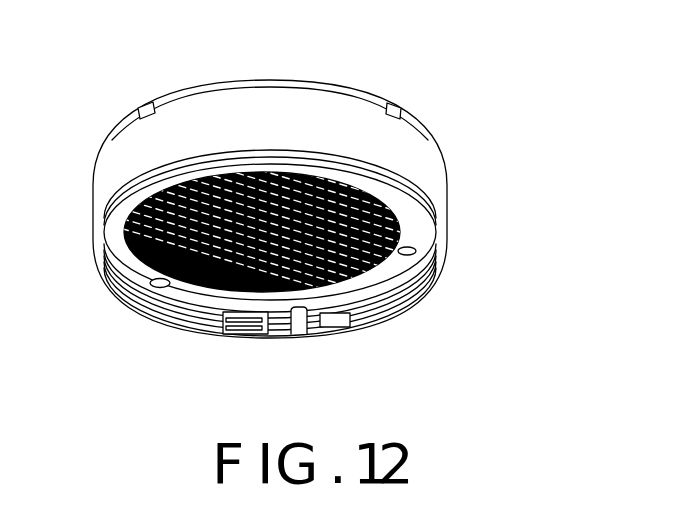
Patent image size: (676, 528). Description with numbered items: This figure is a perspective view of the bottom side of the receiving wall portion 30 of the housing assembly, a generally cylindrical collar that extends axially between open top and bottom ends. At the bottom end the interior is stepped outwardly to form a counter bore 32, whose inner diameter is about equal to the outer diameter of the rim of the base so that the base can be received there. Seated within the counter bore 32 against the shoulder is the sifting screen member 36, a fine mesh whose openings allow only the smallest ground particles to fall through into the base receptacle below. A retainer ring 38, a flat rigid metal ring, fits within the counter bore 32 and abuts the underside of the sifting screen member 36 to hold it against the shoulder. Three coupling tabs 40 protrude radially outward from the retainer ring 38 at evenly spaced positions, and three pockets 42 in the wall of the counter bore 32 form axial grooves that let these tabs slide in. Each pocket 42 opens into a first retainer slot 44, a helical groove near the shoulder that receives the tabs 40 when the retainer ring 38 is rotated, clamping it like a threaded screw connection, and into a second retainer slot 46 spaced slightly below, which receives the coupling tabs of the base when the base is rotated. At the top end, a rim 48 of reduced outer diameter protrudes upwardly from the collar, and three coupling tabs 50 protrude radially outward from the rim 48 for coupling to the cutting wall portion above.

The receiving wall portion 30 is at (265, 50).
The counter bore 32 is at (326, 322).
The sifting screen member 36 is at (316, 180).
The retainer ring 38 is at (382, 280).
The coupling tabs 40 is at (136, 288).
The pockets 42 is at (281, 330).
The first retainer slots 44 is at (193, 308).
The second retainer slots 46 is at (212, 322).
The rim 48 is at (208, 86).
The coupling tabs 50 is at (134, 110).